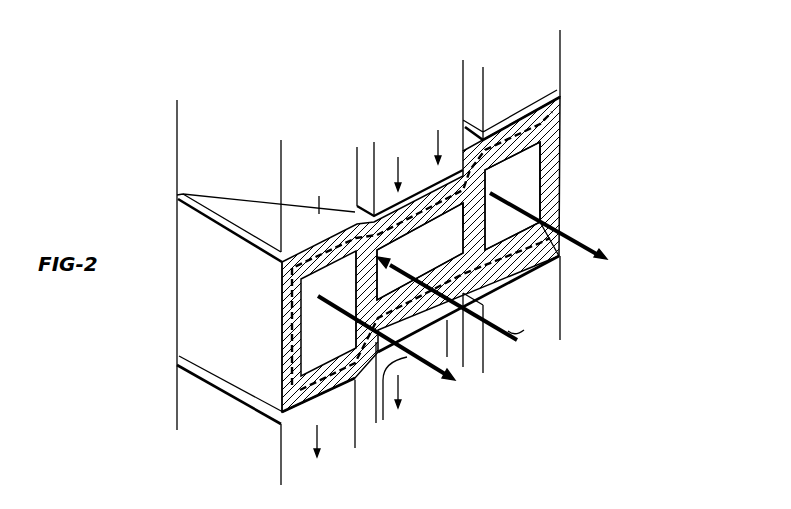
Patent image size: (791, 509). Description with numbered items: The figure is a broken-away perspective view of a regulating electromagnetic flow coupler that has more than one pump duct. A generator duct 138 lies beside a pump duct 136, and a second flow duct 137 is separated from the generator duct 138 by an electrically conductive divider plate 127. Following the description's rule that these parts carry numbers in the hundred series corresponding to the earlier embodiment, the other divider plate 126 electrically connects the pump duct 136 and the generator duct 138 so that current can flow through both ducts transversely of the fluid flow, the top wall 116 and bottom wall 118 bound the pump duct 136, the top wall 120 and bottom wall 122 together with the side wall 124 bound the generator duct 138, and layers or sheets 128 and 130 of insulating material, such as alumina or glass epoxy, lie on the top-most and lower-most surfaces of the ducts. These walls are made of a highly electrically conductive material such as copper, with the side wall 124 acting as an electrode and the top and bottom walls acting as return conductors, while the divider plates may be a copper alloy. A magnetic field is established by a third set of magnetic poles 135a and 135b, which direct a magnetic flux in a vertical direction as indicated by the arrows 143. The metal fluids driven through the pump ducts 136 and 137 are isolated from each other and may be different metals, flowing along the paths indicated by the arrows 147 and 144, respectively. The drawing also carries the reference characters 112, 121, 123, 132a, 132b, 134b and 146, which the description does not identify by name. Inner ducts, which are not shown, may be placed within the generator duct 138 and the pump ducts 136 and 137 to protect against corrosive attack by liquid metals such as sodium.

The plate assembly 112 is at (566, 129).
The top wall 116 is at (522, 114).
The bottom wall 118 is at (522, 300).
The top wall 120 is at (427, 192).
The upper left plate 121 is at (325, 237).
The bottom wall 122 is at (563, 170).
The lower left plate 123 is at (342, 392).
The side wall 124 is at (282, 326).
The electrically conductive divider plate 126 is at (463, 236).
The electrically conductive divider plate 127 is at (358, 280).
The insulating sheet 128 is at (518, 68).
The insulating sheet 130 is at (559, 257).
The upper edge 132a is at (566, 40).
The lower edge 132b is at (550, 297).
The flow direction 134b is at (414, 380).
The magnetic pole 135a is at (192, 142).
The magnetic pole 135b is at (192, 411).
The pump duct 136 is at (522, 242).
The second flow duct 137 is at (336, 346).
The generator duct 138 is at (395, 259).
The arrows 143 is at (319, 212).
The arrows 144 is at (578, 231).
The flow direction 146 is at (536, 329).
The arrows 147 is at (402, 399).